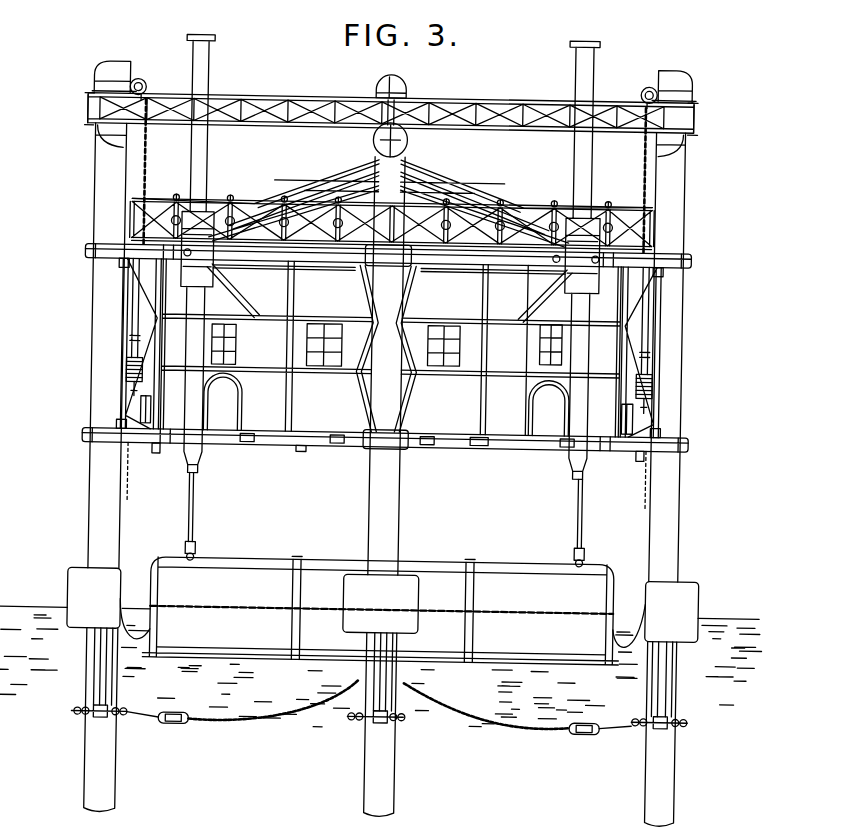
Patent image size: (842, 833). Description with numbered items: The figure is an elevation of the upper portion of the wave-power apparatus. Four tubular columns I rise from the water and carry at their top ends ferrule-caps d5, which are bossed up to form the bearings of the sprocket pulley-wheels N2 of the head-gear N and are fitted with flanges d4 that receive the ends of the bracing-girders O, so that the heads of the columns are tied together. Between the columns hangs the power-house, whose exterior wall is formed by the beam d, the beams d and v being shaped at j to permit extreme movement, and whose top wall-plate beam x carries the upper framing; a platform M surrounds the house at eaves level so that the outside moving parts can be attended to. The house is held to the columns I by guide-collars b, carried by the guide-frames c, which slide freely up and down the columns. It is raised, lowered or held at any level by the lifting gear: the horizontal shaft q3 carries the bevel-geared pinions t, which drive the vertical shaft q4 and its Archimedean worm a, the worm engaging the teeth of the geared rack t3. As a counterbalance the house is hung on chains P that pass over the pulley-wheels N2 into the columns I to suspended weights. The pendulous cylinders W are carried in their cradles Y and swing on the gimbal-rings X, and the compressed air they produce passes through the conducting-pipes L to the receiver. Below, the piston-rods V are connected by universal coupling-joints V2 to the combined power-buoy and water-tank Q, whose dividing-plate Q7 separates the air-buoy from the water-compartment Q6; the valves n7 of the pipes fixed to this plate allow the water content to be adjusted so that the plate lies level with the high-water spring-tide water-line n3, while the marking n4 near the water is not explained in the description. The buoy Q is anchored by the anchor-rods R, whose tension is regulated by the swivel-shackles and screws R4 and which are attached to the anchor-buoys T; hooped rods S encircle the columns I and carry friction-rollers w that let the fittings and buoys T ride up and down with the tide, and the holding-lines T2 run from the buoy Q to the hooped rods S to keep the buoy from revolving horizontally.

The bracing-girders O is at (504, 101).
The head-gear N is at (108, 66).
The sprocket pulley-wheel N2 is at (141, 89).
The flanges d4 is at (80, 100).
The ferrule-caps d5 is at (682, 142).
The chain P is at (146, 174).
The pendulous cylinders W is at (204, 176).
The cradles Y is at (390, 256).
The gimbal-rings X is at (391, 256).
The platform M is at (241, 204).
The tubular columns I is at (90, 199).
The guide-collars b is at (690, 253).
The guide-frames c is at (118, 268).
The beam d is at (300, 449).
The geared rack t3 is at (120, 303).
The beam v is at (128, 345).
The Archimedean worm a is at (125, 376).
The vertical shaft q4 is at (130, 397).
The bevel-geared pinions t is at (140, 411).
The horizontal shaft q3 is at (158, 448).
The top wall-plate beam x is at (389, 275).
The conducting-pipes L is at (224, 290).
The shaped portion of beams j is at (226, 444).
The piston-rods V is at (195, 524).
The universal coupling-joints V2 is at (199, 555).
The power-buoy Q is at (444, 554).
The dividing-plate Q7 is at (226, 608).
The water-compartment Q6 is at (154, 633).
The valves n7 is at (300, 560).
The anchor-buoy T is at (383, 604).
The holding-lines T2 is at (133, 610).
The water-line n3 is at (42, 612).
The water n4 is at (381, 673).
The anchor-fittings S is at (77, 717).
The friction-rollers w is at (114, 722).
The anchor-rods R is at (268, 723).
The swivel-shackle and screws R4 is at (177, 728).